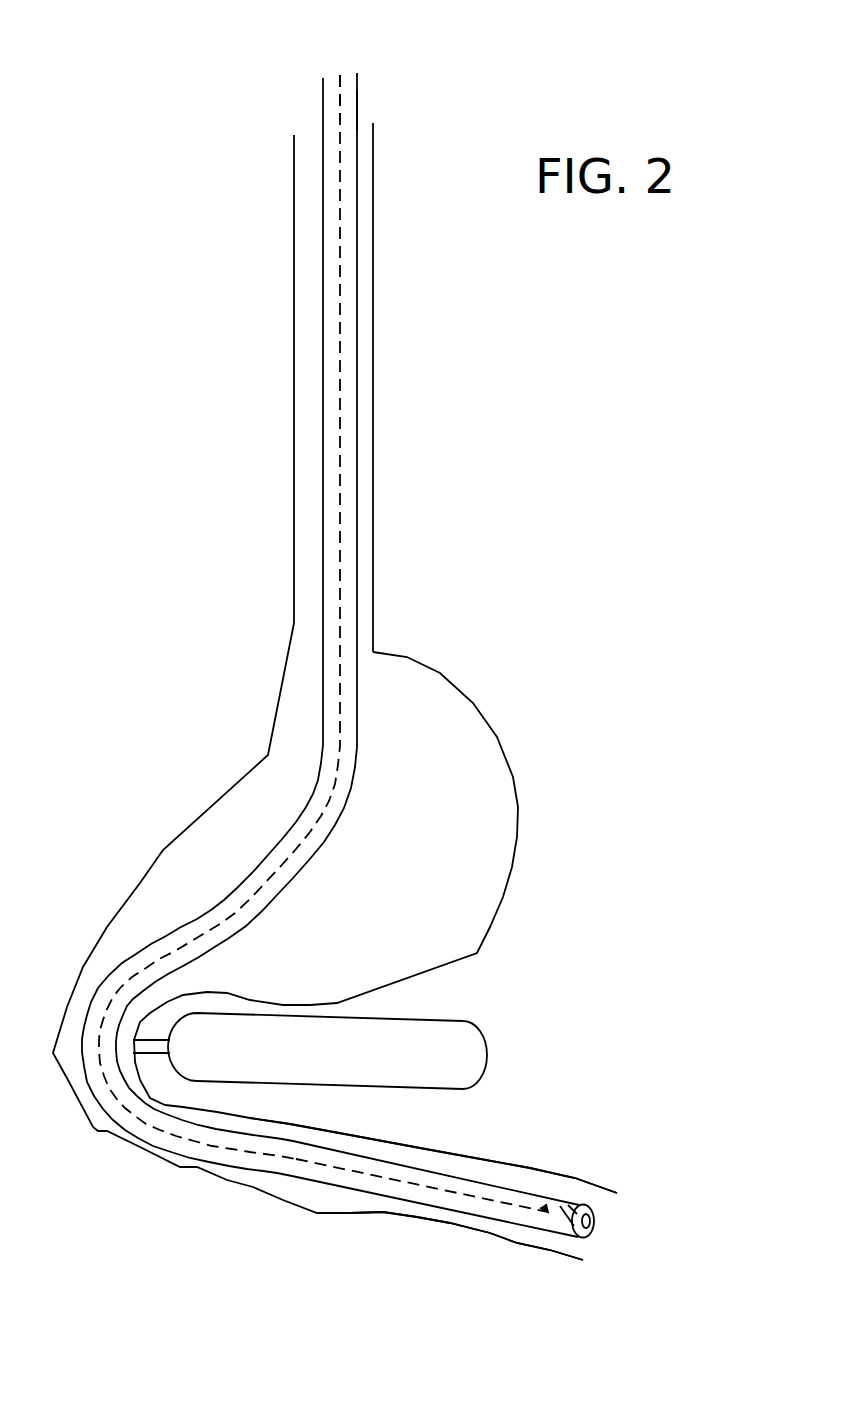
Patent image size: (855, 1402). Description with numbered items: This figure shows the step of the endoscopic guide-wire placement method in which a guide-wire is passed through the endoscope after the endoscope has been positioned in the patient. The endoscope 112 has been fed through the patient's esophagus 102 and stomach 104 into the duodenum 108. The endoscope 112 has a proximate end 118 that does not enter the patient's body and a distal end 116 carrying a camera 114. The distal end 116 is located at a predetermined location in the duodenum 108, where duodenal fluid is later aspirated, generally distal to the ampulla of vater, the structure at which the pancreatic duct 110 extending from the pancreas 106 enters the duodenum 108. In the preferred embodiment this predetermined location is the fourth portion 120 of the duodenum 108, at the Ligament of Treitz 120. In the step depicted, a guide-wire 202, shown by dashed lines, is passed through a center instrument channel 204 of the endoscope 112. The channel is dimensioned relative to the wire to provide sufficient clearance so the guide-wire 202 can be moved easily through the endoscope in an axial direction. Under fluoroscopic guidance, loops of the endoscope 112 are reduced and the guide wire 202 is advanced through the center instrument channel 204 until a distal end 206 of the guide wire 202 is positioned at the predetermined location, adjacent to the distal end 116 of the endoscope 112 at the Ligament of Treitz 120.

The esophagus 102 is at (373, 365).
The stomach 104 is at (517, 813).
The pancreas 106 is at (487, 1048).
The duodenum 108 is at (530, 1168).
The pancreatic duct 110 is at (150, 1053).
The endoscope 112 is at (372, 113).
The camera 114 is at (593, 1228).
The distal end 116 is at (490, 1217).
The proximate end 118 is at (321, 95).
The fourth portion of duodenum 120 is at (402, 1277).
The guide-wire 202 is at (340, 313).
The center instrument channel 204 is at (328, 66).
The distal end of guide wire 206 is at (583, 1178).